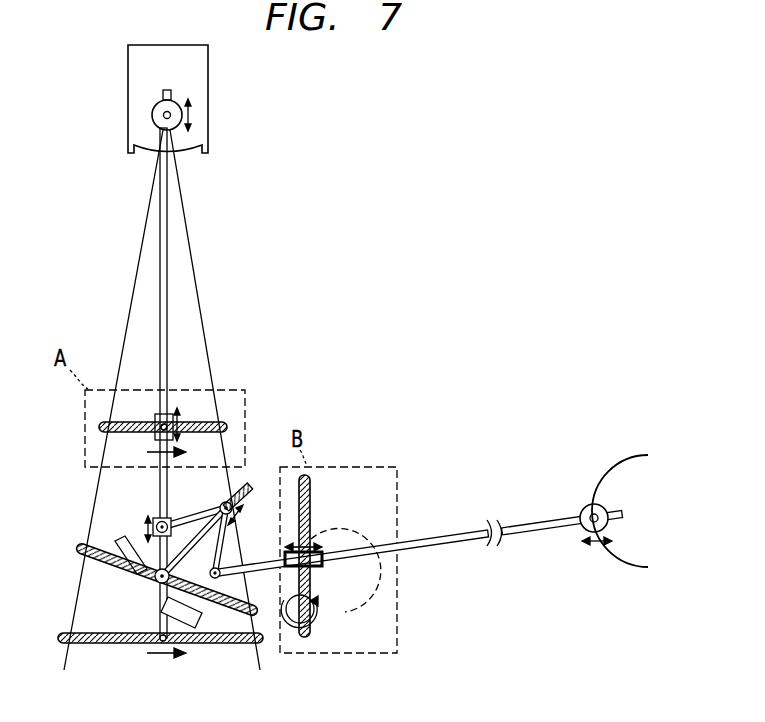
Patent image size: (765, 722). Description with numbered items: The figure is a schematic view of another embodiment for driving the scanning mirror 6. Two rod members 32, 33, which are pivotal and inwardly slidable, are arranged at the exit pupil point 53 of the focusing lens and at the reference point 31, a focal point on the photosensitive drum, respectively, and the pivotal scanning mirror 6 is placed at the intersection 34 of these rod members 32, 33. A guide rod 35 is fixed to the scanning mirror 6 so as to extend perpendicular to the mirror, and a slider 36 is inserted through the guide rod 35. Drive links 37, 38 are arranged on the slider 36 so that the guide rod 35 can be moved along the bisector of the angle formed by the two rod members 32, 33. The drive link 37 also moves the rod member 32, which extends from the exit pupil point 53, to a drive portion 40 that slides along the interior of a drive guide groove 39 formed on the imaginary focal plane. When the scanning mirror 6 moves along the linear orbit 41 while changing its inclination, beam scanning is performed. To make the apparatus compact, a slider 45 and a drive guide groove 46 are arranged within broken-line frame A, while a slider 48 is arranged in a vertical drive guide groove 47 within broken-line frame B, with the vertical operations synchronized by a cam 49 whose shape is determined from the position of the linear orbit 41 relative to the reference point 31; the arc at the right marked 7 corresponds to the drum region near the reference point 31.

The exit pupil point 53 is at (164, 117).
The rod member 32 is at (163, 249).
The slider 45 is at (160, 420).
The drive guide groove 46 is at (228, 427).
The guide rod 35 is at (248, 491).
The slider 36 is at (222, 504).
The drive link 37 is at (191, 521).
The drive link 38 is at (229, 540).
The scanning mirror 6 is at (121, 544).
The linear orbit 41 is at (113, 561).
The intersection 34 is at (159, 582).
The drive guide groove 39 is at (96, 644).
The drive portion 40 is at (161, 640).
The vertical drive guide groove 47 is at (306, 638).
The slider 48 is at (313, 560).
The cam 49 is at (312, 619).
The rod member 33 is at (530, 520).
The reference point 31 is at (589, 511).
The wheel 7 is at (621, 464).